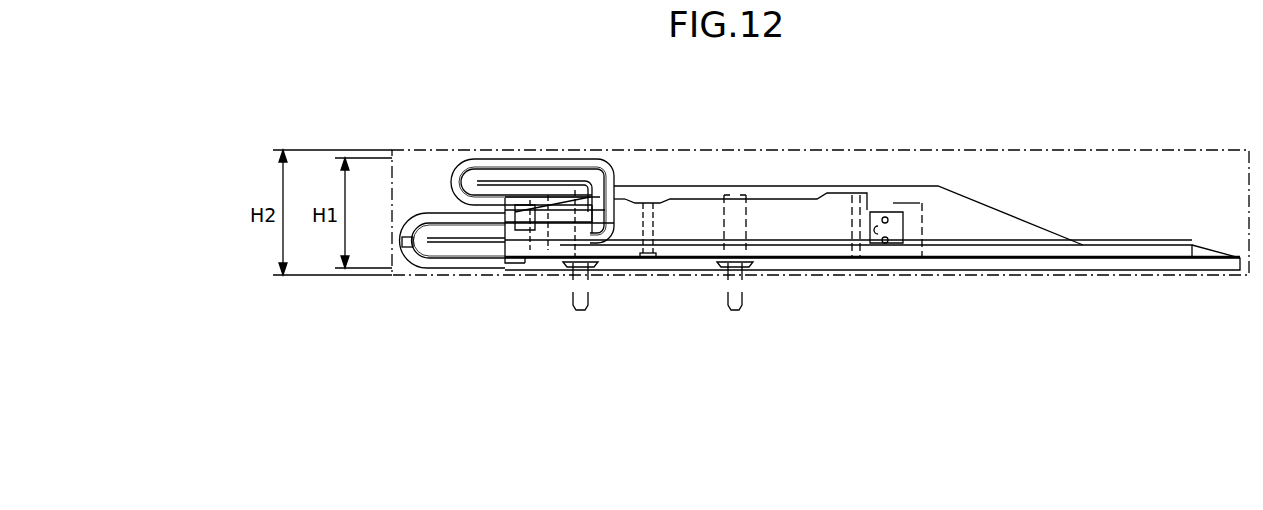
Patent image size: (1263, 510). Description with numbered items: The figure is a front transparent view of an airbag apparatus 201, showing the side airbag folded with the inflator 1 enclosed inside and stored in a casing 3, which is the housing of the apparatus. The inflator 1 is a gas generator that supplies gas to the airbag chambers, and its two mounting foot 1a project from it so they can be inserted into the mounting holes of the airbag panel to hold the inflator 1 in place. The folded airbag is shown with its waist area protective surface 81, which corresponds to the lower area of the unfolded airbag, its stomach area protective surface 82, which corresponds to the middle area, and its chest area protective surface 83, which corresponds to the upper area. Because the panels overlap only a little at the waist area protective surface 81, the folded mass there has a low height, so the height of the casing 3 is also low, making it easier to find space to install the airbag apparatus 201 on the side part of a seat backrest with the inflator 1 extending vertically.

The airbag apparatus 201 is at (443, 126).
The stomach area protective surface 82 is at (679, 195).
The waist area protective surface 81 is at (480, 233).
The inflator 1 is at (800, 228).
The mounting foot 1a is at (583, 318).
The casing 3 is at (1103, 150).
The chest area protective surface 83 is at (1018, 250).